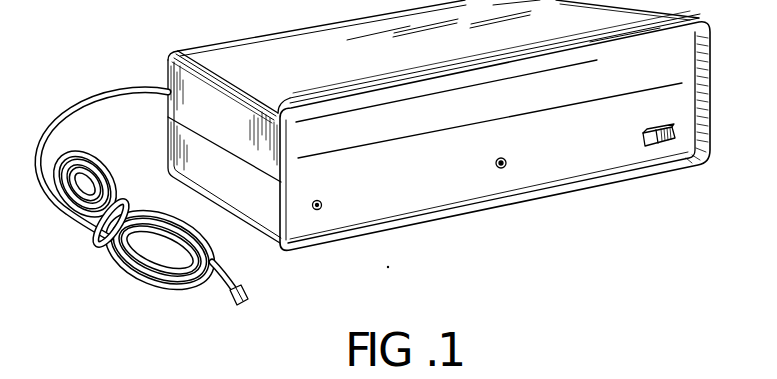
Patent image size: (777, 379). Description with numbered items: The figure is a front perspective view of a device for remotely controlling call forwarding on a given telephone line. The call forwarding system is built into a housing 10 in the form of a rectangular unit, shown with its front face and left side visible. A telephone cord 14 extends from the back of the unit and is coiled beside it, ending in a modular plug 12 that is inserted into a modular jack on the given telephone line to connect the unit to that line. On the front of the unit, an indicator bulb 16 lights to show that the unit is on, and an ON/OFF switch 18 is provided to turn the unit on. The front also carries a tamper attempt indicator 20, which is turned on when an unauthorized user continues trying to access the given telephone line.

The housing 10 is at (222, 30).
The modular plug 12 is at (250, 296).
The telephone cord 14 is at (77, 110).
The indicator bulb 16 is at (320, 210).
The ON/OFF switch 18 is at (652, 144).
The tamper attempt indicator 20 is at (500, 169).